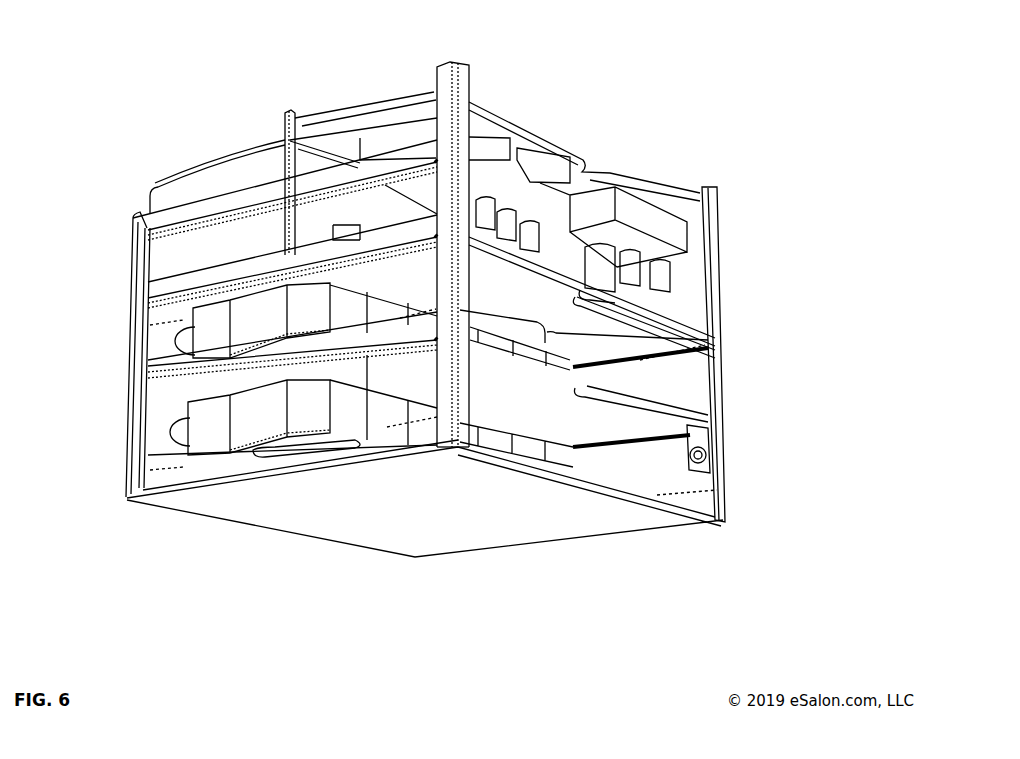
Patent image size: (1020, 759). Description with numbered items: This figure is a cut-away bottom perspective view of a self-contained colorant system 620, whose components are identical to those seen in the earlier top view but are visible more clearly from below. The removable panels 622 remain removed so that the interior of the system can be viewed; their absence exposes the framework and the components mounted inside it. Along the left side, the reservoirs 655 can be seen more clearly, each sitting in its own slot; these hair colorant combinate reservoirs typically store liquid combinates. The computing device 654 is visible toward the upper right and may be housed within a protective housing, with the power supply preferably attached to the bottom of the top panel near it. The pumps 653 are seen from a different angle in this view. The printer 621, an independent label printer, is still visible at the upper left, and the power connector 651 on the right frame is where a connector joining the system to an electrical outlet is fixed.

The self-contained colorant system 620 is at (160, 63).
The printer 621 is at (175, 190).
The removable panels 622 is at (95, 232).
The power connector 651 is at (712, 460).
The pumps 653 is at (543, 343).
The computing device 654 is at (647, 220).
The reservoirs 655 is at (217, 338).